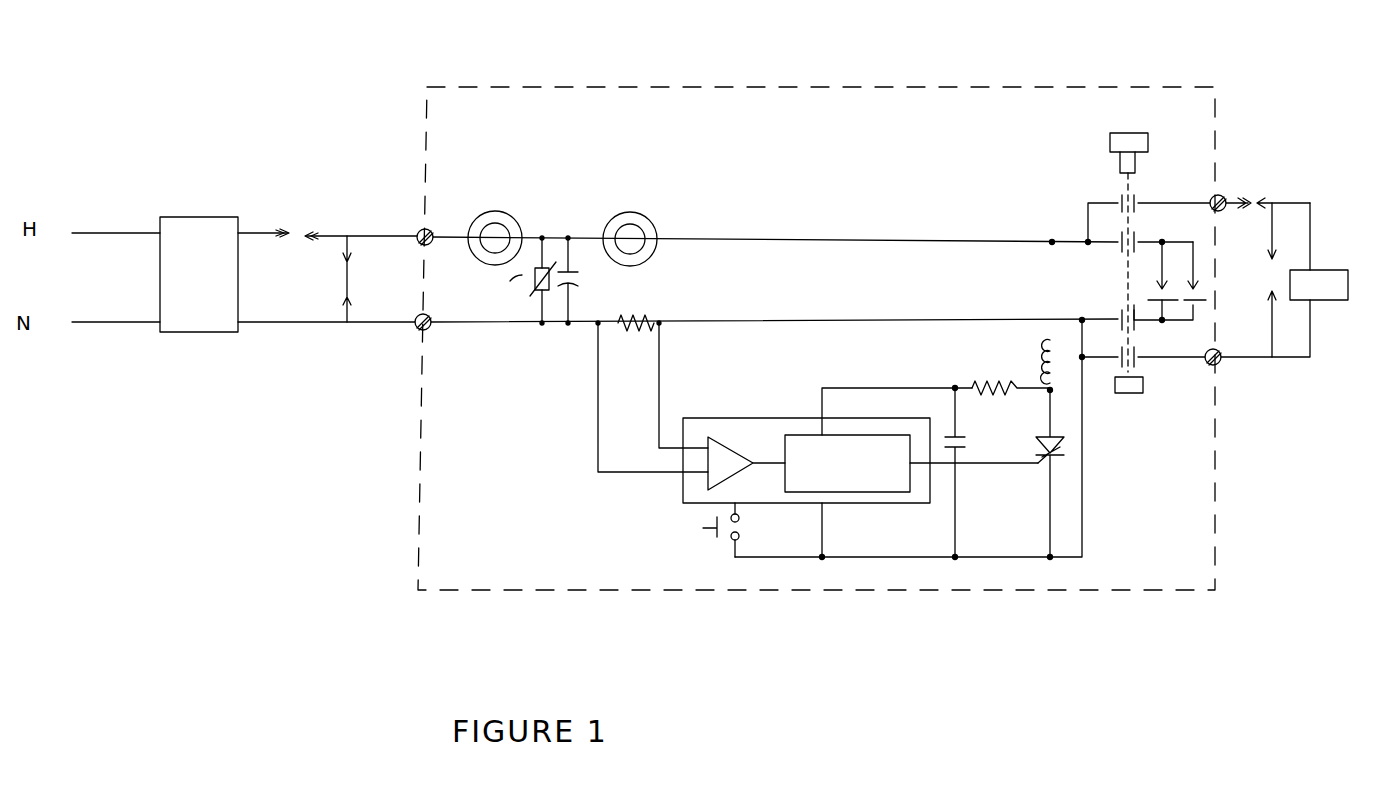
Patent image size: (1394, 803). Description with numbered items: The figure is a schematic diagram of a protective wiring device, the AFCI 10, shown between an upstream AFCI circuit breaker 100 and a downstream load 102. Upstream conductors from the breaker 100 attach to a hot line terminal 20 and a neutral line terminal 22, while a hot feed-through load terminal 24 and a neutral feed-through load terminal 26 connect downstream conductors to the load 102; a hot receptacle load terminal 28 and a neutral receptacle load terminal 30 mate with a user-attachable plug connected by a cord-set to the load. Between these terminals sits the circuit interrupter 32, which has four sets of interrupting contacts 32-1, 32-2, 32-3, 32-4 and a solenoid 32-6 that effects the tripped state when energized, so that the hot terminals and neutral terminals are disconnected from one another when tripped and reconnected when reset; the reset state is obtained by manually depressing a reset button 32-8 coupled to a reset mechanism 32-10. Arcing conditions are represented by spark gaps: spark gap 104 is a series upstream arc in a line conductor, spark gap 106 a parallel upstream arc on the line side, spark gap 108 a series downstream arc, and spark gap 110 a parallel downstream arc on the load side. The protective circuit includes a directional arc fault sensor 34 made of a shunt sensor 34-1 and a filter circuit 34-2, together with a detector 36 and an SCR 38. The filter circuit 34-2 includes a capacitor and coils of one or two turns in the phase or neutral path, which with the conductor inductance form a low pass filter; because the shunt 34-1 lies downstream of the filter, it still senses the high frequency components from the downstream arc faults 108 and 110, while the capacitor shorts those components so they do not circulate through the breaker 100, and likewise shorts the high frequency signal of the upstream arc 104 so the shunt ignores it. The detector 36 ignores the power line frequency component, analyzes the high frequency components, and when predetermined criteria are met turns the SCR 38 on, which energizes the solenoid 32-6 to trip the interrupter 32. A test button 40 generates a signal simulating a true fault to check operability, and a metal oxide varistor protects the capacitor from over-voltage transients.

The AFCI 10 is at (788, 71).
The hot line terminal 20 is at (416, 220).
The neutral line terminal 22 is at (411, 333).
The hot feed-through load terminal 24 is at (1208, 191).
The neutral feed-through load terminal 26 is at (1222, 370).
The hot receptacle load terminal 28 is at (1157, 277).
The neutral receptacle load terminal 30 is at (1142, 293).
The circuit interrupter 32 is at (1071, 271).
The interrupting contacts 32-1 is at (1100, 190).
The interrupting contacts 32-2 is at (1105, 235).
The interrupting contacts 32-3 is at (1117, 330).
The interrupting contacts 32-4 is at (1165, 369).
The solenoid 32-6 is at (1030, 343).
The reset button 32-8 is at (1124, 133).
The reset mechanism 32-10 is at (1128, 400).
The directional arc fault sensor 34 is at (550, 242).
The shunt sensor 34-1 is at (625, 342).
The filter circuit 34-2 is at (532, 189).
The detector 36 is at (741, 413).
The SCR 38 is at (1070, 447).
The test button 40 is at (688, 530).
The AFCI circuit breaker 100 is at (193, 207).
The load 102 is at (1328, 270).
The spark gap 104 is at (303, 210).
The spark gap 106 is at (330, 283).
The spark gap 108 is at (1246, 189).
The spark gap 110 is at (1262, 277).